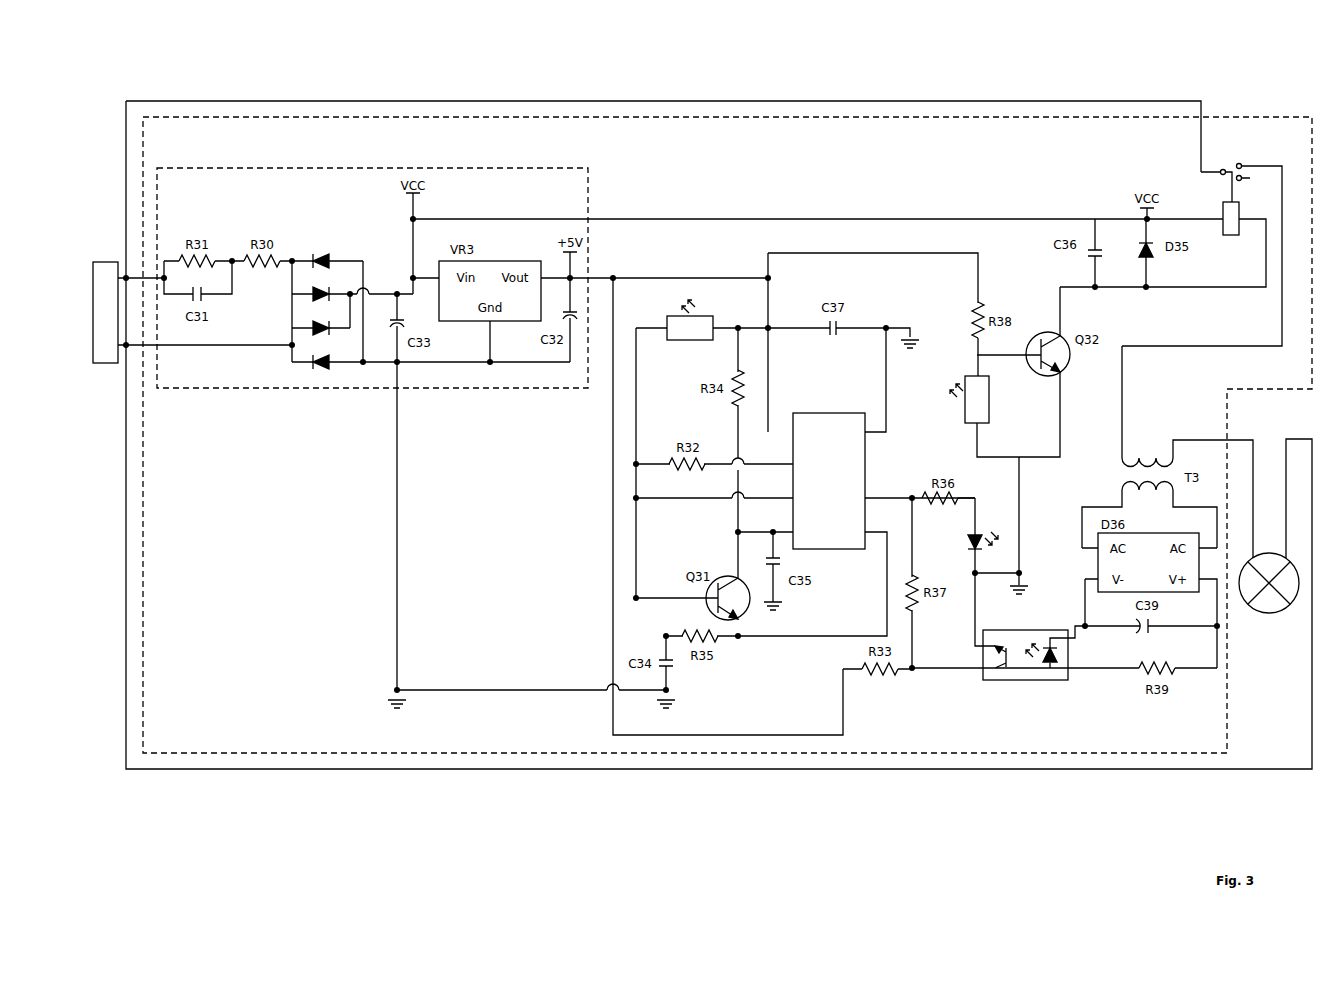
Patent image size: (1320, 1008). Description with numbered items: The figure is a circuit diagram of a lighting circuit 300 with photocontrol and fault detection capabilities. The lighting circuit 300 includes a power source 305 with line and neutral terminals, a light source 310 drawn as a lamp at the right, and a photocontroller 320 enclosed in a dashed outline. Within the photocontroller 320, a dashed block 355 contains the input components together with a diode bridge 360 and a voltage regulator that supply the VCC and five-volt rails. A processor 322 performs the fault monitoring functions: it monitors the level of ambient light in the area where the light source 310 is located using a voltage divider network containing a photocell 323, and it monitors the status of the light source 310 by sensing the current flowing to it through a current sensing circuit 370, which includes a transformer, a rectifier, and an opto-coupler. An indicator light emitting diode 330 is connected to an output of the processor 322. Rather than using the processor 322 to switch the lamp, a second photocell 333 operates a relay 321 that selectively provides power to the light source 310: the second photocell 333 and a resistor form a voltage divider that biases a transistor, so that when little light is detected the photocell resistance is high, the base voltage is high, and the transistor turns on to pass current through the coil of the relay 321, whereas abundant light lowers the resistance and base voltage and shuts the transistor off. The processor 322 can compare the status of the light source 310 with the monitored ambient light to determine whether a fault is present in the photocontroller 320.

The lighting circuit 300 is at (127, 50).
The power source 305 is at (105, 303).
The light source 310 is at (1269, 595).
The photocontroller 320 is at (727, 425).
The relay 321 is at (1228, 150).
The processor 322 is at (829, 473).
The photocell 323 is at (690, 332).
The light emitting diode 330 is at (968, 535).
The second photocell 333 is at (953, 400).
The power conversion circuit 355 is at (275, 168).
The bridge rectifier 360 is at (312, 218).
The current sensing circuit 370 is at (1103, 696).